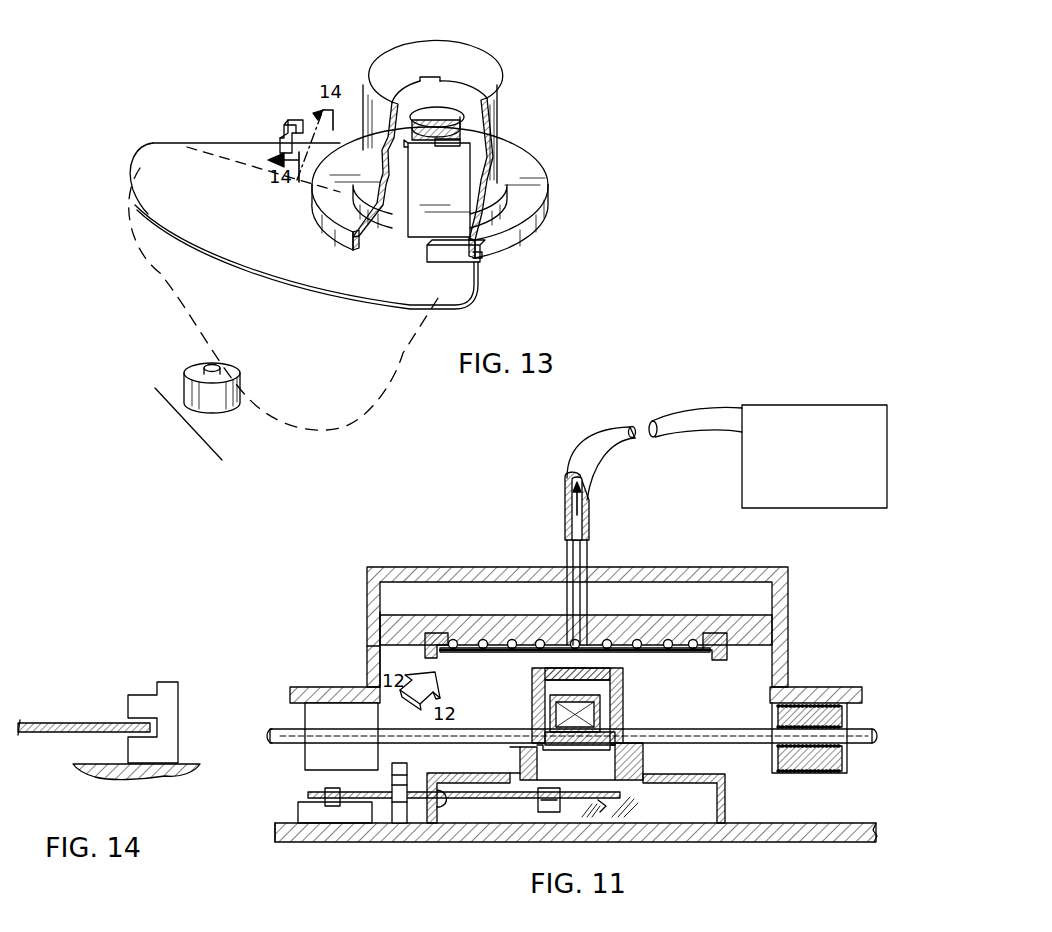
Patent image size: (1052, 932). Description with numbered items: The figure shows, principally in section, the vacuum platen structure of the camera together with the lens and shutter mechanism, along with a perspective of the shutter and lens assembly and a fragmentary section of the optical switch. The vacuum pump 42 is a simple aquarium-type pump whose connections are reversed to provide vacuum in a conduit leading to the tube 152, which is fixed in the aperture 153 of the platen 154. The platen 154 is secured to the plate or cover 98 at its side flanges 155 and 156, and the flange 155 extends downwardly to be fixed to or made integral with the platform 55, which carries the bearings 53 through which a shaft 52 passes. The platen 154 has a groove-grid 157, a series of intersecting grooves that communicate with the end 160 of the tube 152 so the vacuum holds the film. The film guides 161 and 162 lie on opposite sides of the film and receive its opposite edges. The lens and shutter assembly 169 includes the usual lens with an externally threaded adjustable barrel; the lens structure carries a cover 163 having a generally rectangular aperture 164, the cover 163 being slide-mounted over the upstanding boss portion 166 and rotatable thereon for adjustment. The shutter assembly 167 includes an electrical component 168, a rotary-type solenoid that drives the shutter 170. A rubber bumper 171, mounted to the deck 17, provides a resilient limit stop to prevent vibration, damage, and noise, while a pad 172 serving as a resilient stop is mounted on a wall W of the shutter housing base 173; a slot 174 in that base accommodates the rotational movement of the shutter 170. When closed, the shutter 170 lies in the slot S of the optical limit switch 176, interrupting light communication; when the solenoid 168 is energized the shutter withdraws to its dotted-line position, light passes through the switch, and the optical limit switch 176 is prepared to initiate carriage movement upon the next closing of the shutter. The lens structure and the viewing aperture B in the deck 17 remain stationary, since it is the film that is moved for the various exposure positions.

In FIG. 13, the deck 17 is at (200, 425).
In FIG. 11, the deck 17 is at (860, 842).
In FIG. 11, the vacuum pump 42 is at (795, 430).
In FIG. 11, the shaft 52 is at (847, 737).
In FIG. 11, the bearings 53 is at (330, 752).
In FIG. 11, the platform 55 is at (325, 692).
In FIG. 11, the plate or cover 98 is at (730, 572).
In FIG. 11, the tube 152 is at (590, 600).
In FIG. 11, the aperture 153 is at (583, 617).
In FIG. 11, the platen 154 is at (422, 625).
In FIG. 11, the side flange 155 is at (780, 630).
In FIG. 11, the side flange 156 is at (378, 625).
In FIG. 11, the groove-grid 157 is at (690, 638).
In FIG. 11, the end of vacuum tube 160 is at (630, 646).
In FIG. 11, the film guide 161 is at (440, 634).
In FIG. 11, the film guide 162 is at (720, 660).
In FIG. 13, the cover 163 is at (497, 108).
In FIG. 11, the cover 163 is at (623, 676).
In FIG. 13, the rectangular aperture 164 is at (429, 83).
In FIG. 11, the rectangular aperture 164 is at (575, 670).
In FIG. 11, the upstanding boss portion 166 is at (548, 745).
In FIG. 11, the shutter assembly 167 is at (283, 800).
In FIG. 11, the electrical component 168 is at (345, 812).
In FIG. 11, the lens and shutter assembly 169 is at (647, 757).
In FIG. 13, the shutter 170 is at (350, 285).
In FIG. 14, the shutter 170 is at (80, 721).
In FIG. 11, the shutter 170 is at (620, 797).
In FIG. 13, the rubber bumper 171 is at (232, 400).
In FIG. 13, the pad 172 is at (462, 141).
In FIG. 11, the pad 172 is at (548, 812).
In FIG. 13, the shutter housing base 173 is at (530, 240).
In FIG. 11, the shutter housing base 173 is at (725, 800).
In FIG. 11, the slot 174 is at (445, 808).
In FIG. 13, the optical limit switch 176 is at (292, 120).
In FIG. 14, the optical limit switch 176 is at (165, 707).
In FIG. 11, the optical limit switch 176 is at (407, 770).
In FIG. 14, the slot S is at (153, 728).
In FIG. 11, the viewing aperture B is at (578, 835).
In FIG. 11, the wall W is at (612, 806).